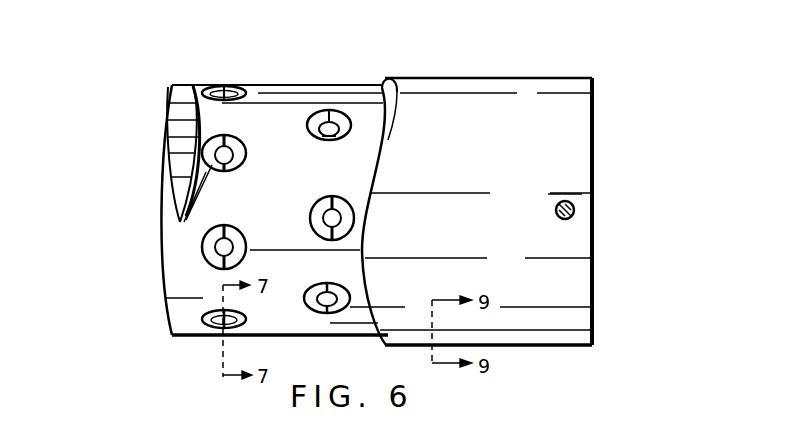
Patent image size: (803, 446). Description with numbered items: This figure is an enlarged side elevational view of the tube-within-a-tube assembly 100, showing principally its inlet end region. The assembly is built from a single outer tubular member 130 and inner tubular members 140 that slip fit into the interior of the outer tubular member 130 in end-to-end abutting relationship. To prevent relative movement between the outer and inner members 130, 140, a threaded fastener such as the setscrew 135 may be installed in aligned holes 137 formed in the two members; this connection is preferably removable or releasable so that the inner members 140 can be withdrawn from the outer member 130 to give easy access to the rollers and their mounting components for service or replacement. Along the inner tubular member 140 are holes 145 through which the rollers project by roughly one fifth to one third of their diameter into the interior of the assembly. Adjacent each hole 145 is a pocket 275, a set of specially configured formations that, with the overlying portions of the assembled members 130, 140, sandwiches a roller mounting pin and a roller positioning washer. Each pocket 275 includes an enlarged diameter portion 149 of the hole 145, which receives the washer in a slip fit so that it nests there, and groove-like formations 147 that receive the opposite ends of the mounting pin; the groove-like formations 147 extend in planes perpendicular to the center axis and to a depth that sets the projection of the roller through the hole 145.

The rotary drill bit assembly 100 is at (507, 63).
The outer tubular member 130 is at (543, 90).
The setscrew 135 is at (565, 200).
The hole 137 is at (575, 210).
The inner tubular member 140 is at (290, 100).
The hole 145 is at (247, 152).
The groove-like formation 147 is at (232, 228).
The enlarged diameter portion 149 is at (202, 248).
The pocket 275 is at (222, 86).